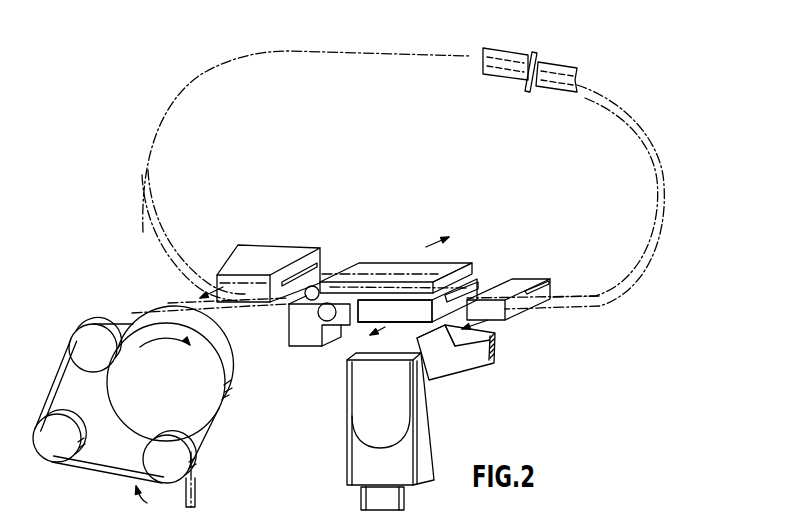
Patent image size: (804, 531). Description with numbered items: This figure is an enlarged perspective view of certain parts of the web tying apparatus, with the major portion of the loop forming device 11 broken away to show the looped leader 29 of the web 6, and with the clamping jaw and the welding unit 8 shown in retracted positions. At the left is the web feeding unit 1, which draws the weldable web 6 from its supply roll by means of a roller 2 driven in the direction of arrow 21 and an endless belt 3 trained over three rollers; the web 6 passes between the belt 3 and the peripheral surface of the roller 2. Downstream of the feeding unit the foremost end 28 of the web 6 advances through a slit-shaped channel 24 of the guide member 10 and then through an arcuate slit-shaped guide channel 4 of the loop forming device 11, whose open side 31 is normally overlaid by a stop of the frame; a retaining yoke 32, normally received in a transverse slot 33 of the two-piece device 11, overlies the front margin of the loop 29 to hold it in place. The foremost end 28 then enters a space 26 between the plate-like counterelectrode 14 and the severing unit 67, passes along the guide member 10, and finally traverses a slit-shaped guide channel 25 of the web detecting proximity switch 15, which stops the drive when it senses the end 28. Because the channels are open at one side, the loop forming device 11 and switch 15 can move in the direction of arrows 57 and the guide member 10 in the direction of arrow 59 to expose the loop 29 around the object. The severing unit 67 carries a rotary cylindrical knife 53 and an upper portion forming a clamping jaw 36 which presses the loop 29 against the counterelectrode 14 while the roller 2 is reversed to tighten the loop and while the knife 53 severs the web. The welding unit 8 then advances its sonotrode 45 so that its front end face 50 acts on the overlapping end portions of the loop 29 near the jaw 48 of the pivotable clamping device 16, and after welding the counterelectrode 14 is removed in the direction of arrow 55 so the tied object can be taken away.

The web feeding unit 1 is at (146, 504).
The roller 2 is at (198, 410).
The endless belt 3 is at (115, 471).
The arcuate slit-shaped guide channel 4 is at (320, 288).
The weldable web 6 is at (196, 496).
The welding unit 8 is at (408, 497).
The guide member 10 is at (375, 311).
The loop forming device 11 is at (240, 252).
The counterelectrode 14 is at (445, 266).
The web detecting proximity switch 15 is at (526, 310).
The pivotable clamping device 16 is at (480, 359).
The arrow 21 is at (148, 334).
The slit-shaped channel 24 is at (484, 282).
The slit-shaped guide channel 25 is at (550, 281).
The space 26 is at (477, 270).
The foremost end 28 is at (566, 284).
The loop 29 is at (143, 163).
The open side 31 is at (317, 265).
The retaining yoke 32 is at (532, 92).
The transverse slot 33 is at (524, 87).
The clamping jaw 36 is at (331, 275).
The sonotrode 45 is at (422, 455).
The jaw 48 is at (430, 365).
The front end face 50 is at (393, 360).
The rotary cylindrical knife 53 is at (318, 314).
The arrow 55 is at (428, 230).
The arrows 57 is at (223, 287).
The arrow 59 is at (402, 318).
The severing unit 67 is at (299, 342).